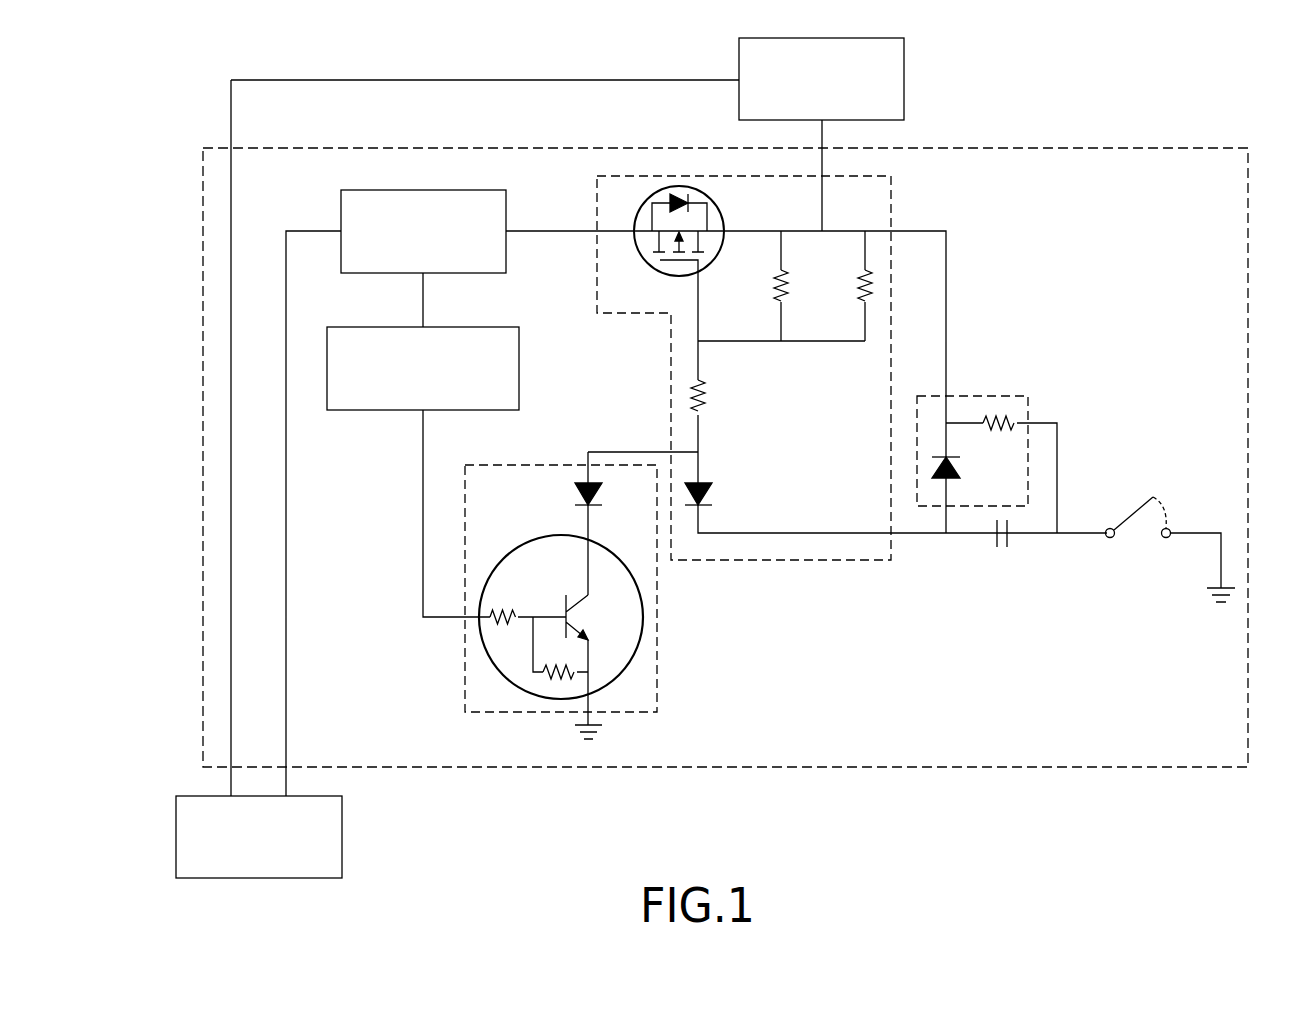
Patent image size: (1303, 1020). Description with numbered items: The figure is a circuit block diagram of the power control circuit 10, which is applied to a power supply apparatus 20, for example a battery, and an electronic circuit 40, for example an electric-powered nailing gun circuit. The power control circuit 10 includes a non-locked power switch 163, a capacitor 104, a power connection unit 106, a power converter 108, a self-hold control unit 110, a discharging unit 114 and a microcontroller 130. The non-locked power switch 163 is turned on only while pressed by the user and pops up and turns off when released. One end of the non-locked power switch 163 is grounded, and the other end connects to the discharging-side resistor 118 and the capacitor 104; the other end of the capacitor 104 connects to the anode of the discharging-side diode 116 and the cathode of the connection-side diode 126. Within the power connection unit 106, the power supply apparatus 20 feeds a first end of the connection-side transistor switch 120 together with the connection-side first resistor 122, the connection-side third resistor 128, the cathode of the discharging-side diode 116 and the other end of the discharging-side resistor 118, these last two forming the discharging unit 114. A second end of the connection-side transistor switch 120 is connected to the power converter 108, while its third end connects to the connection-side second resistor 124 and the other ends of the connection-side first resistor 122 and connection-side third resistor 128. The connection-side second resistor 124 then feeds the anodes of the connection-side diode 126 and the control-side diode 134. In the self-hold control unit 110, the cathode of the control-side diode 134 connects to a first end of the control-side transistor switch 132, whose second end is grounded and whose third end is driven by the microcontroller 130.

The power control circuit 10 is at (1083, 155).
The power supply apparatus 20 is at (822, 43).
The electronic circuit 40 is at (176, 837).
The capacitor 104 is at (1001, 547).
The power connection unit 106 is at (885, 198).
The power converter 108 is at (423, 195).
The self-hold control unit 110 is at (648, 675).
The discharging unit 114 is at (974, 402).
The discharging-side diode 116 is at (964, 471).
The discharging-side resistor 118 is at (1000, 438).
The connection-side transistor switch 120 is at (668, 230).
The connection-side first resistor 122 is at (760, 285).
The connection-side second resistor 124 is at (719, 395).
The connection-side diode 126 is at (717, 493).
The connection-side third resistor 128 is at (842, 285).
The microcontroller 130 is at (413, 333).
The control-side transistor switch 132 is at (561, 622).
The control-side diode 134 is at (570, 493).
The non-locked power switch 163 is at (1138, 531).